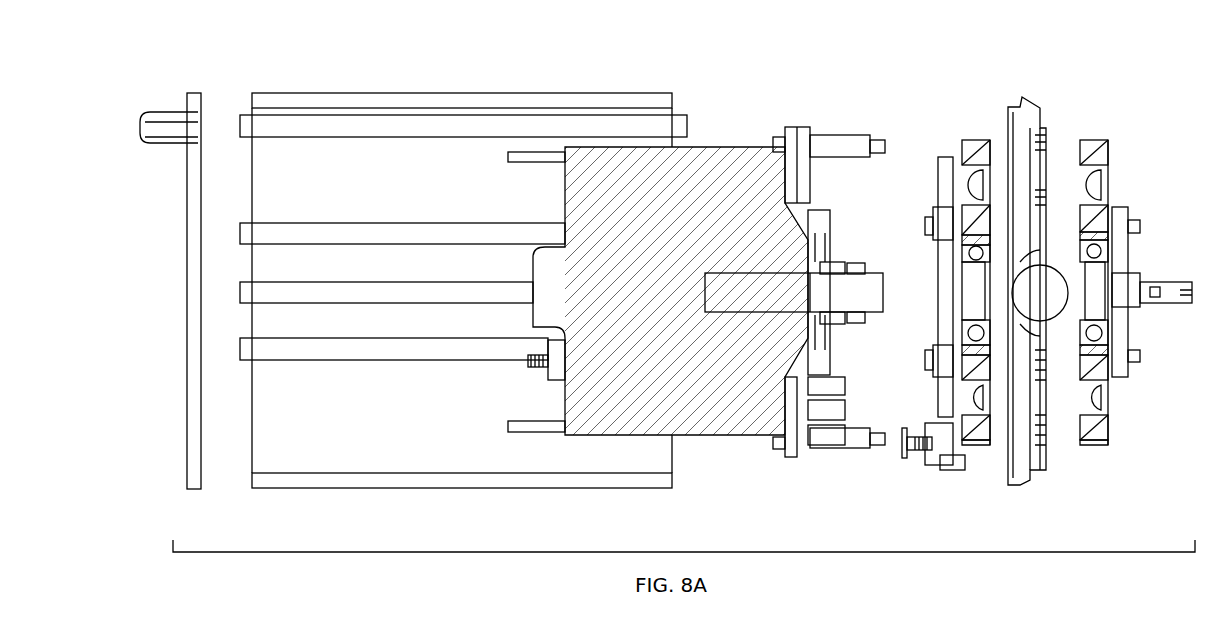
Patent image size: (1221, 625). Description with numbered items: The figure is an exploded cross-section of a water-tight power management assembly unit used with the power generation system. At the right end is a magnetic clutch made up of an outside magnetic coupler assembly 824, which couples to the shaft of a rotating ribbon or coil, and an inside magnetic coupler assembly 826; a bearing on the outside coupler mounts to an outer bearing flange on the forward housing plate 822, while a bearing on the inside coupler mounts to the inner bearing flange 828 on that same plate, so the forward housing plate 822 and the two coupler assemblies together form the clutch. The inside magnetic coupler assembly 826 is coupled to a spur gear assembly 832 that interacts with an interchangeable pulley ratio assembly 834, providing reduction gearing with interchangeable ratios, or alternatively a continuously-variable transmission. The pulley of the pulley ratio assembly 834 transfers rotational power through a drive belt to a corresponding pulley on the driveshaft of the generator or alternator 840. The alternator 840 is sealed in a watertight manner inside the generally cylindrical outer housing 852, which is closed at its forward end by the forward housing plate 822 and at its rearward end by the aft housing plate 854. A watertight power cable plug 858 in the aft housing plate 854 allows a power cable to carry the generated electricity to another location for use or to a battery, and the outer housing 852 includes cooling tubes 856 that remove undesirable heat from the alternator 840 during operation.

The forward housing plate 822 is at (1022, 97).
The outside magnetic coupler assembly 824 is at (1100, 135).
The inside magnetic coupler assembly 826 is at (975, 140).
The inner bearing flange 828 is at (1062, 335).
The spur gear assembly 832 is at (942, 157).
The interchangeable pulley ratio assembly 834 is at (905, 460).
The alternator 840 is at (718, 147).
The outer housing 852 is at (475, 490).
The aft housing plate 854 is at (202, 482).
The cooling tubes 856 is at (455, 108).
The watertight power cable plug 858 is at (152, 110).